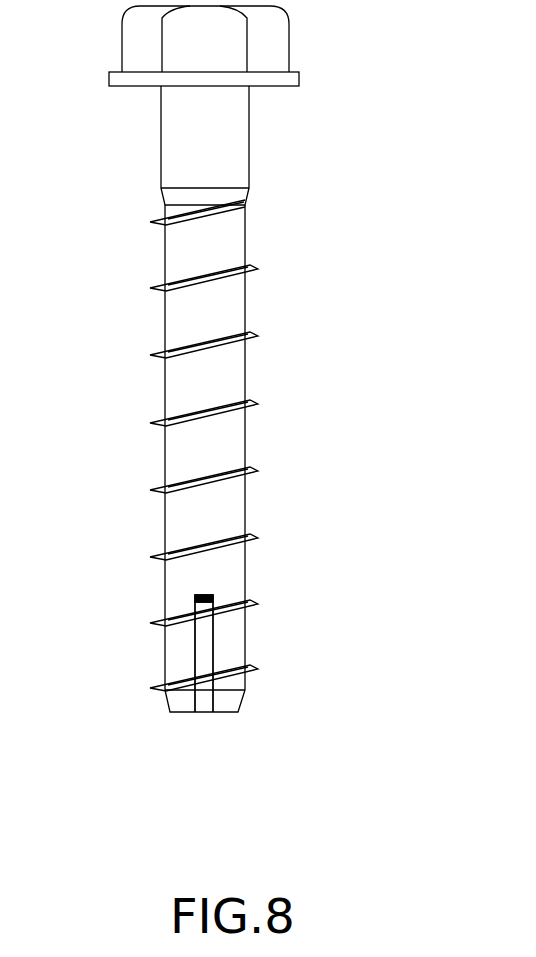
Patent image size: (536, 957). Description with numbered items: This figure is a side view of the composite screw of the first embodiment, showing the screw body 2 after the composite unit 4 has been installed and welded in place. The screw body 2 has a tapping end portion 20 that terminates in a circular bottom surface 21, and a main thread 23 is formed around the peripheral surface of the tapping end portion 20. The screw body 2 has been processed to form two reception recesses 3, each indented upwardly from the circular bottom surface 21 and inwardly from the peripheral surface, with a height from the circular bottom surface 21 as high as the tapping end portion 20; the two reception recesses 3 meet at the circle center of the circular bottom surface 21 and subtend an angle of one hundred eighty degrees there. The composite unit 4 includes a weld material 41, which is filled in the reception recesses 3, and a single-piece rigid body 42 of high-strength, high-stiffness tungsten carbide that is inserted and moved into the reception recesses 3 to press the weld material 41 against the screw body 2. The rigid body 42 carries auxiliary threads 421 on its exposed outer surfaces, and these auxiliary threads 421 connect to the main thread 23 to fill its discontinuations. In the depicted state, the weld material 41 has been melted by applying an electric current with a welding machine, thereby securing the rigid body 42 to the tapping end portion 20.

The screw body 2 is at (245, 394).
The tapping end portion 20 is at (287, 602).
The circular bottom surface 21 is at (228, 713).
The main thread 23 is at (158, 353).
The reception recess 3 is at (208, 622).
The composite unit 4 is at (167, 578).
The weld material 41 is at (210, 597).
The rigid body 42 is at (203, 653).
The auxiliary thread 421 is at (195, 603).